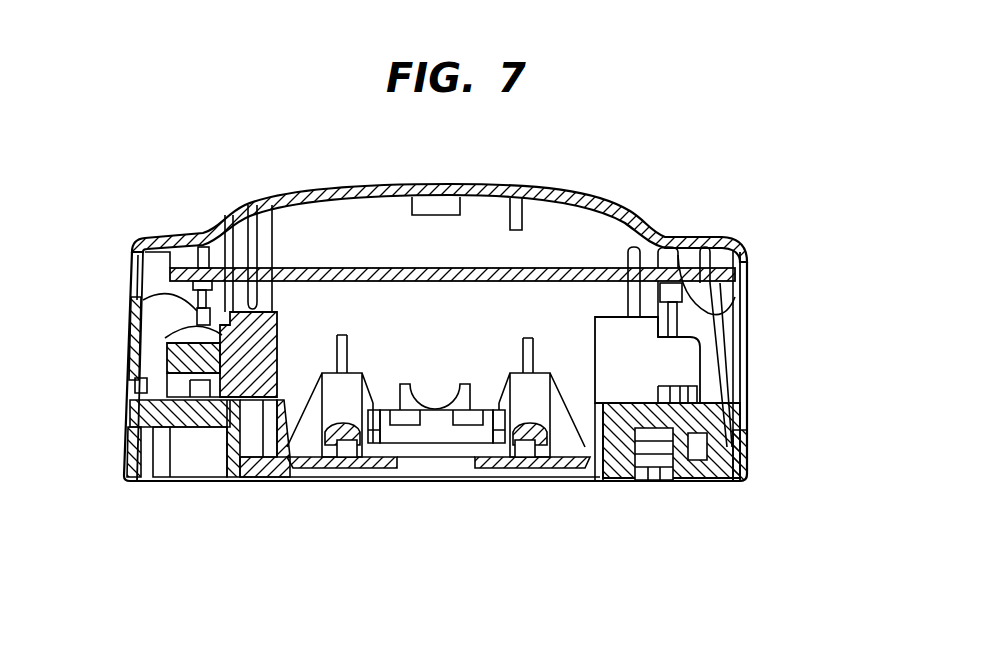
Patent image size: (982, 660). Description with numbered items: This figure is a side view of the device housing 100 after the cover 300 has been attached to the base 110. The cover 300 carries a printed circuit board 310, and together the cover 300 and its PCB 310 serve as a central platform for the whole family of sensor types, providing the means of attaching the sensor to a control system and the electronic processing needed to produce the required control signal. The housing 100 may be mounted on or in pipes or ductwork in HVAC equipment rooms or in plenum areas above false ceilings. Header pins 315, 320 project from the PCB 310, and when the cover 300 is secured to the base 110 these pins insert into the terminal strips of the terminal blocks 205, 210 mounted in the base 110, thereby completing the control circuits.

The device housing 100 is at (776, 424).
The base 110 is at (280, 477).
The terminal block 205 is at (693, 357).
The terminal block 210 is at (170, 343).
The cover 300 is at (749, 267).
The printed circuit board 310 is at (534, 270).
The header pin 315 is at (702, 318).
The header pin 320 is at (135, 302).